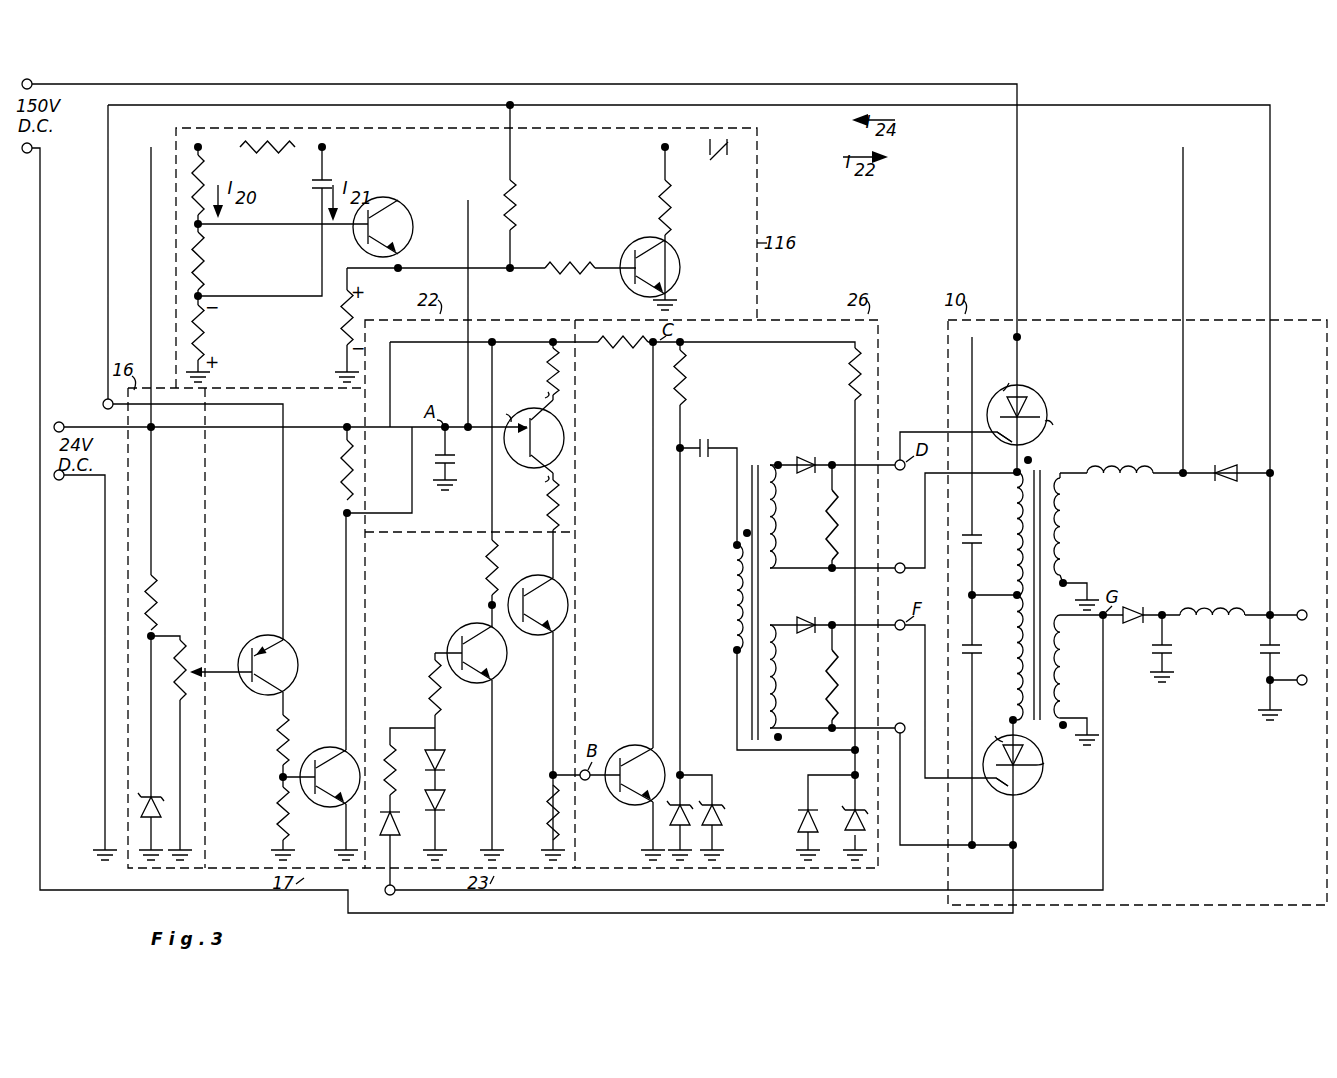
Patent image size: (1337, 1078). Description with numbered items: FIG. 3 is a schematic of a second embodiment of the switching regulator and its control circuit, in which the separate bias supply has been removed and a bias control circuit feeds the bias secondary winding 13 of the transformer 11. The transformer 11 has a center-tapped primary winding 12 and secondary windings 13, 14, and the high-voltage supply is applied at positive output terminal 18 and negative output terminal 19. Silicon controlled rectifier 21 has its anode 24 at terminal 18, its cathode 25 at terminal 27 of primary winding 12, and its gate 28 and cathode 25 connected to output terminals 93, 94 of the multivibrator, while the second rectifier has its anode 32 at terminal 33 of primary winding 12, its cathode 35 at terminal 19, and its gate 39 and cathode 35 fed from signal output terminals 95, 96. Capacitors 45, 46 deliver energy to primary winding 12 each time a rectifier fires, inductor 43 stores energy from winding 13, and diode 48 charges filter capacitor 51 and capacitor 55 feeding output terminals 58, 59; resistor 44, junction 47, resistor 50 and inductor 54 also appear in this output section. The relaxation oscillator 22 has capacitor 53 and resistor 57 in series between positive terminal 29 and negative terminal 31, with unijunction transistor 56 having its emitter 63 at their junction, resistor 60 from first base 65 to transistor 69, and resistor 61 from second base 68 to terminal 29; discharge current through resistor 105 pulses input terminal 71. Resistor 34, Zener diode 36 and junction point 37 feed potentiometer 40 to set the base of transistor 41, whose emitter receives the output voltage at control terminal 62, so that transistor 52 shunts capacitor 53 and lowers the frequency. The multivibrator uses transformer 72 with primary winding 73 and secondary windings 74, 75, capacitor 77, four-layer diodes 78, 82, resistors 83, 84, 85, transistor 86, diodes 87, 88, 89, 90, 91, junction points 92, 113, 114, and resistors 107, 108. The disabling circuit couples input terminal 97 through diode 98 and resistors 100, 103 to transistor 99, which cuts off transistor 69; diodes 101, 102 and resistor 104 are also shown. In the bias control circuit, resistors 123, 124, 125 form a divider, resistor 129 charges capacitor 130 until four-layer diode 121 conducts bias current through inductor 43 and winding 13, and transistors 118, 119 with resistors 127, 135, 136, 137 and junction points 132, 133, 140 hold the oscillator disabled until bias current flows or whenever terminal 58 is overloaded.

The transformer 11 is at (1039, 598).
The primary winding 12 is at (1010, 666).
The bias secondary winding 13 is at (1070, 518).
The secondary winding 14 is at (1066, 682).
The positive output terminal 18 is at (32, 82).
The negative output terminal 19 is at (27, 153).
The silicon controlled rectifier 21 is at (1025, 408).
The relaxation oscillator 22 is at (1023, 767).
The anode 24 is at (996, 376).
The cathode 25 is at (1060, 430).
The terminal of primary winding 27 is at (1008, 480).
The gate 28 is at (995, 448).
The positive terminal 29 is at (62, 423).
The negative terminal 31 is at (62, 480).
The anode 32 is at (988, 731).
The terminal of primary winding 33 is at (1000, 712).
The resistor 34 is at (158, 578).
The cathode 35 is at (1054, 765).
The Zener diode 36 is at (157, 795).
The junction point 37 is at (155, 634).
The gate 39 is at (989, 790).
The potentiometer 40 is at (178, 700).
The transistor 41 is at (277, 665).
The inductor 43 is at (1132, 458).
The resistor 44 is at (280, 746).
The capacitor 45 is at (980, 535).
The capacitor 46 is at (980, 645).
The junction 47 is at (978, 592).
The diode 48 is at (1130, 626).
The resistor 50 is at (278, 815).
The filter capacitor 51 is at (1172, 648).
The transistor 52 is at (321, 790).
The capacitor 53 is at (458, 460).
The inductor 54 is at (1224, 616).
The capacitor 55 is at (1260, 652).
The unijunction transistor 56 is at (529, 440).
The resistor 57 is at (340, 462).
The output terminal 58 is at (1304, 610).
The output terminal 59 is at (1304, 675).
The resistor 60 is at (551, 509).
The resistor 61 is at (546, 362).
The control terminal 62 is at (104, 400).
The emitter 63 is at (508, 408).
The first base 65 is at (535, 482).
The second base 68 is at (536, 390).
The transistor 69 is at (538, 617).
The input terminal 71 is at (585, 780).
The transformer 72 is at (757, 585).
The primary winding 73 is at (734, 546).
The secondary winding 74 is at (778, 540).
The secondary winding 75 is at (778, 676).
The capacitor 77 is at (712, 445).
The four-layer diode 78 is at (686, 808).
The four-layer diode 82 is at (848, 810).
The resistor 83 is at (688, 380).
The resistor 84 is at (850, 378).
The resistor 85 is at (610, 348).
The transistor 86 is at (635, 789).
The diode 87 is at (1218, 462).
The diode 88 is at (806, 452).
The diode 89 is at (808, 614).
The diode 90 is at (720, 822).
The diode 91 is at (798, 828).
The junction point 92 is at (650, 346).
The output terminal 93 is at (900, 470).
The output terminal 94 is at (900, 563).
The signal output terminal 95 is at (900, 630).
The signal output terminal 96 is at (903, 724).
The input terminal 97 is at (393, 895).
The diode 98 is at (395, 838).
The transistor 99 is at (482, 656).
The resistor 100 is at (392, 786).
The diode 101 is at (448, 768).
The diode 102 is at (448, 808).
The resistor 103 is at (430, 695).
The resistor 104 is at (485, 581).
The resistor 105 is at (546, 805).
The resistor 107 is at (826, 502).
The resistor 108 is at (826, 692).
The junction point 113 is at (851, 774).
The junction point 114 is at (686, 446).
The transistor 118 is at (389, 218).
The transistor 119 is at (668, 273).
The four-layer diode 121 is at (712, 152).
The resistor 123 is at (205, 170).
The resistor 124 is at (205, 258).
The resistor 125 is at (205, 342).
The resistor 127 is at (337, 325).
The resistor 129 is at (264, 155).
The capacitor 130 is at (330, 180).
The junction point 132 is at (326, 145).
The junction point 133 is at (512, 108).
The resistor 135 is at (518, 205).
The resistor 136 is at (587, 264).
The resistor 137 is at (657, 203).
The junction point 140 is at (513, 272).